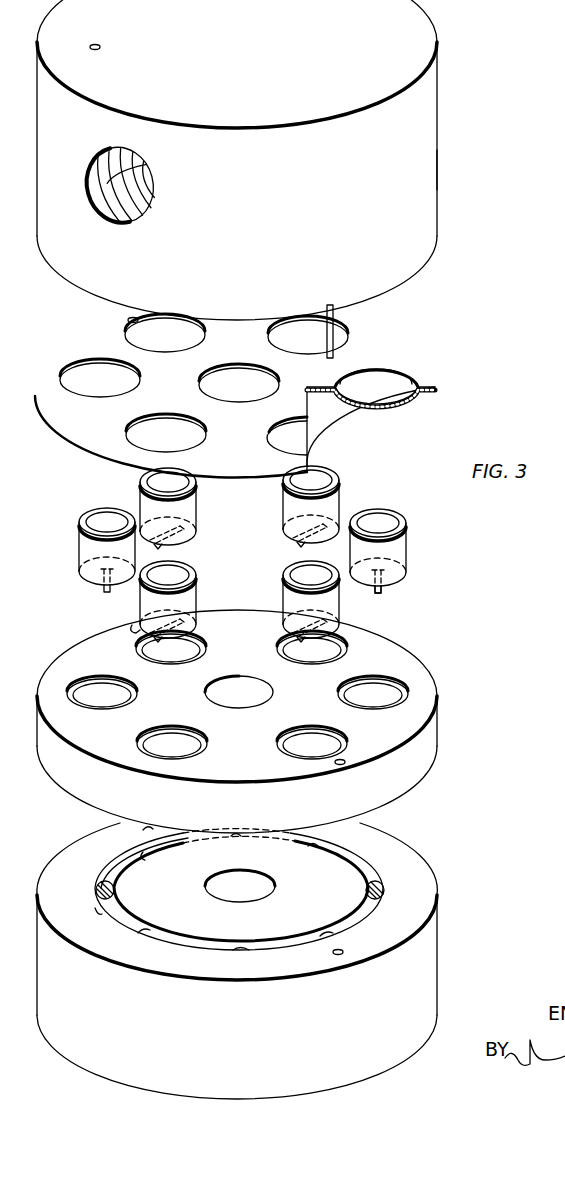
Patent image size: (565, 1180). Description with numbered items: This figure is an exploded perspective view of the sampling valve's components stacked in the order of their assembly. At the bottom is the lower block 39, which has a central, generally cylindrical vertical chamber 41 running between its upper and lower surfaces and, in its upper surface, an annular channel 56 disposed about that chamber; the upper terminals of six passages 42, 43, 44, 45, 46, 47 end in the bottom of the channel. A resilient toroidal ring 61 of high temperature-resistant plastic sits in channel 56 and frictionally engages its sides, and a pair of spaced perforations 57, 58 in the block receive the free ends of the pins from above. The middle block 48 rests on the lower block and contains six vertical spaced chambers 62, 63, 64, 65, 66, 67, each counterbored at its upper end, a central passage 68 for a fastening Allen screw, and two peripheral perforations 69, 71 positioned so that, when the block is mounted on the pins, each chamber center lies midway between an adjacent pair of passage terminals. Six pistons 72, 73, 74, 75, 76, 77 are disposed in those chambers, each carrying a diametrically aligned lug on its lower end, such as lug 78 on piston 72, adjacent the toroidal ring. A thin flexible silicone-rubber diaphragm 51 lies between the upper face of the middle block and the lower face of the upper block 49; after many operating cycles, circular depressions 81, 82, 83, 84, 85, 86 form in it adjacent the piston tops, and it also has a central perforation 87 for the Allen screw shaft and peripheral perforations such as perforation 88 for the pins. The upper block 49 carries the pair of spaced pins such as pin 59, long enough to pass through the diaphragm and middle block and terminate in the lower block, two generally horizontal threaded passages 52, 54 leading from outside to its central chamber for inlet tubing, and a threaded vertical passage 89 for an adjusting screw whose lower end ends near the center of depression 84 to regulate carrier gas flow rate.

The lower block 39 is at (437, 944).
The central vertical chamber 41 is at (262, 888).
The passage 42 is at (326, 931).
The passage 43 is at (314, 846).
The passage 44 is at (237, 837).
The passage 45 is at (146, 858).
The passage 46 is at (146, 930).
The passage 47 is at (242, 946).
The middle block 48 is at (437, 730).
The upper block 49 is at (437, 210).
The flexible diaphragm 51 is at (420, 350).
The threaded passage 52 is at (437, 166).
The second threaded passage 54 is at (90, 197).
The annular channel 56 is at (100, 918).
The perforation 57 is at (343, 952).
The perforation 58 is at (148, 830).
The pin 59 is at (333, 315).
The toroidal ring 61 is at (368, 886).
The vertical chamber 62 is at (384, 680).
The vertical chamber 63 is at (284, 640).
The vertical chamber 64 is at (142, 640).
The vertical chamber 65 is at (70, 690).
The vertical chamber 66 is at (165, 732).
The vertical chamber 67 is at (297, 730).
The central passage 68 is at (210, 684).
The perforation 69 is at (342, 762).
The perforation 71 is at (134, 627).
The piston 72 is at (378, 520).
The piston 73 is at (325, 478).
The piston 74 is at (197, 487).
The piston 75 is at (92, 520).
The piston 76 is at (195, 568).
The piston 77 is at (283, 587).
The lug 78 is at (381, 596).
The circular depression 81 is at (386, 367).
The circular depression 82 is at (268, 333).
The circular depression 83 is at (190, 318).
The circular depression 84 is at (145, 369).
The circular depression 85 is at (134, 424).
The circular depression 86 is at (270, 430).
The central perforation 87 is at (229, 372).
The perforation 88 is at (132, 319).
The threaded vertical passage 89 is at (100, 46).